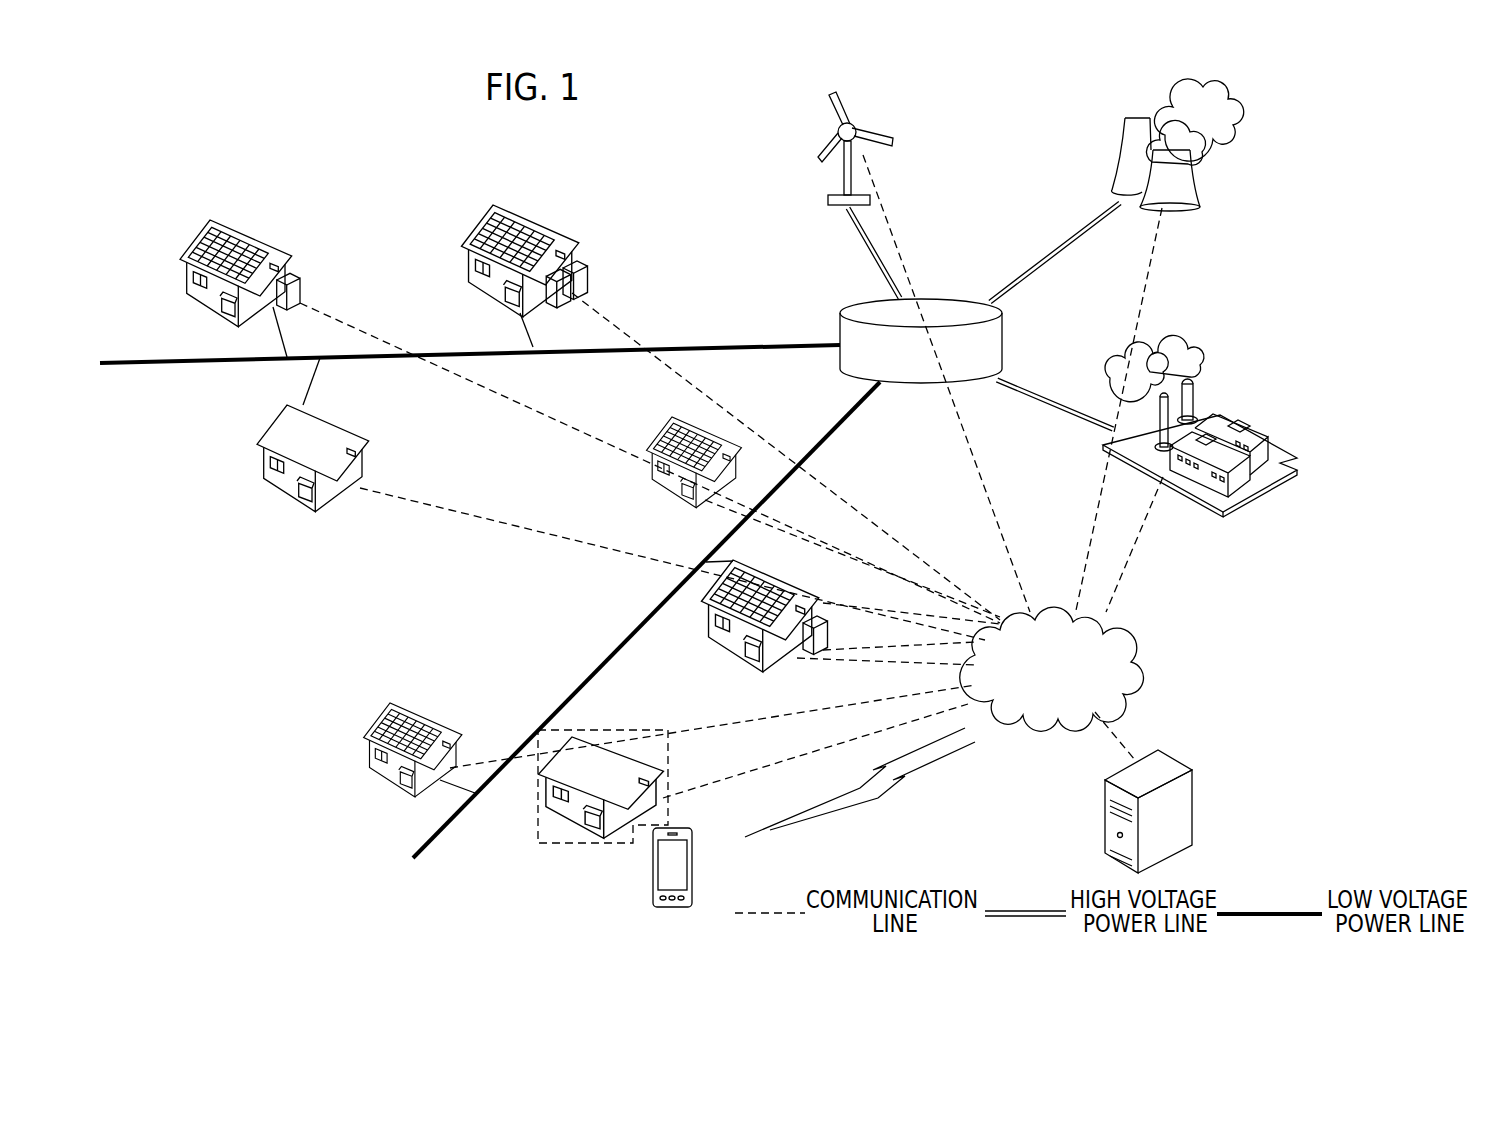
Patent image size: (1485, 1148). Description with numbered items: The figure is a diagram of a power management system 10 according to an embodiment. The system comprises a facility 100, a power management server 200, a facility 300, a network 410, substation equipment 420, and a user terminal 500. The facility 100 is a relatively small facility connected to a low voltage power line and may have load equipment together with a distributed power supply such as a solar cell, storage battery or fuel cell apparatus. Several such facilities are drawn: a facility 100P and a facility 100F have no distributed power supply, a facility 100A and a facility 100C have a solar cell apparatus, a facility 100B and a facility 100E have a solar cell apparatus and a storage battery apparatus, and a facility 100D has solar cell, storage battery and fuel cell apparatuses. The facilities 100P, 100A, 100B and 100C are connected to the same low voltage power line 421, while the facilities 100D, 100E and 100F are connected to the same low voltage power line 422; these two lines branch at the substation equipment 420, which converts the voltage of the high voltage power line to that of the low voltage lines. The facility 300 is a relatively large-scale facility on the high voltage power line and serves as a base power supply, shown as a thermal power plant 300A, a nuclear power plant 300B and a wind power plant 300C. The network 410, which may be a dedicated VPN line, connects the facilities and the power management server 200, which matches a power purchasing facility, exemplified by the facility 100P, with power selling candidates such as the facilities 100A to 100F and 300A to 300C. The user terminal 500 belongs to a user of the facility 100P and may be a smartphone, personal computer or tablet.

The power management system 10 is at (703, 142).
The facility 100 is at (526, 508).
The facility 100A is at (657, 427).
The facility 100B is at (770, 668).
The facility 100C is at (442, 691).
The facility 100D is at (548, 228).
The facility 100E is at (252, 232).
The facility 100F is at (263, 423).
The facility 100P is at (598, 738).
The power management server 200 is at (1185, 762).
The facility 300 is at (1085, 298).
The facility 300A is at (1248, 425).
The facility 300B is at (1125, 155).
The facility 300C is at (862, 128).
The network 410 is at (1130, 633).
The substation equipment 420 is at (1003, 337).
The low voltage power line 421 is at (834, 432).
The low voltage power line 422 is at (735, 346).
The user terminal 500 is at (693, 866).